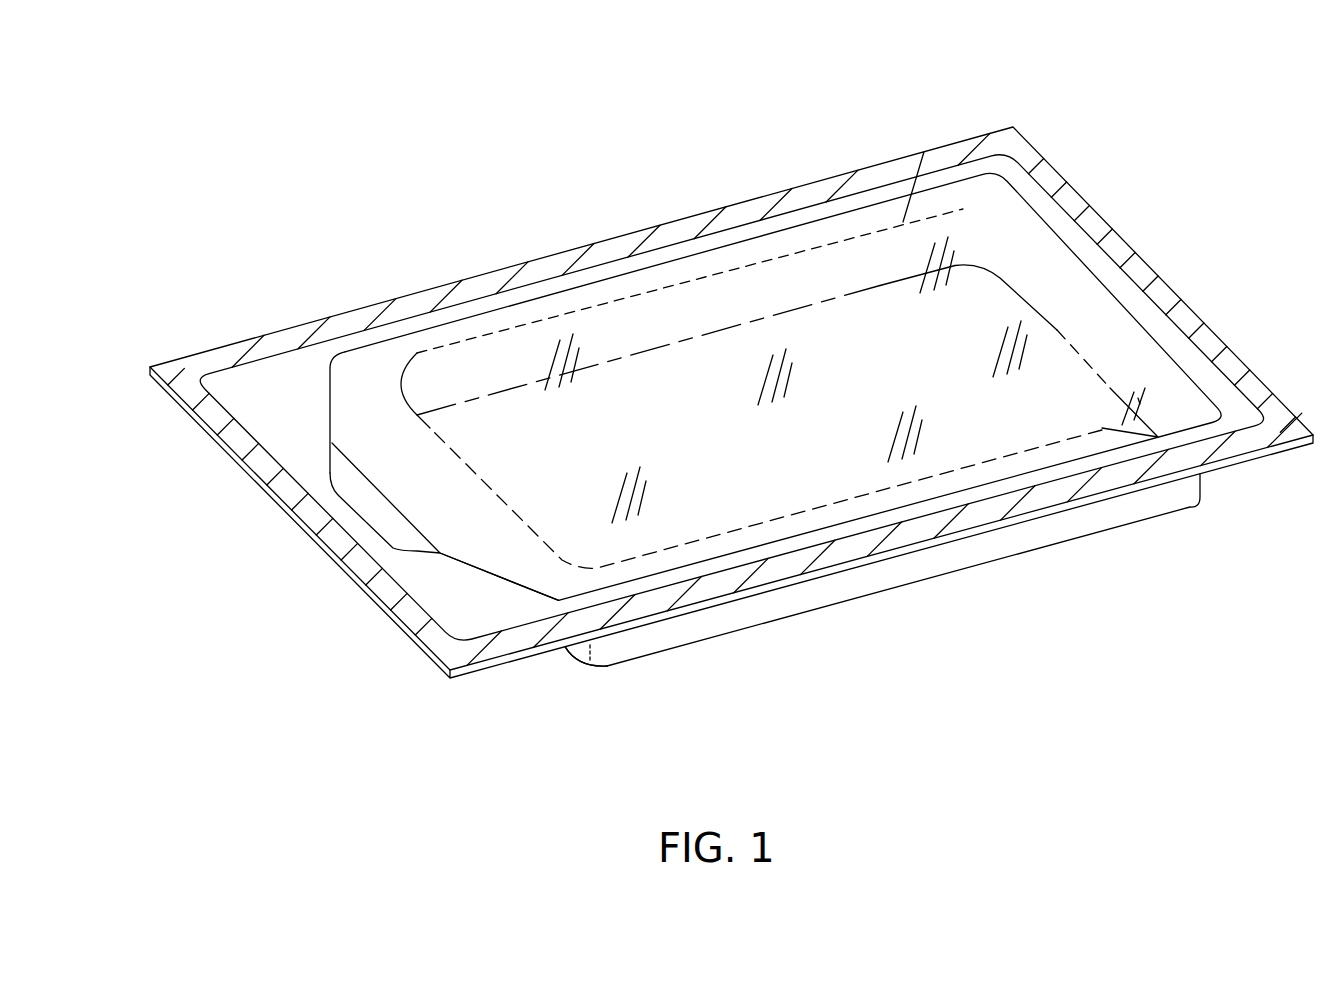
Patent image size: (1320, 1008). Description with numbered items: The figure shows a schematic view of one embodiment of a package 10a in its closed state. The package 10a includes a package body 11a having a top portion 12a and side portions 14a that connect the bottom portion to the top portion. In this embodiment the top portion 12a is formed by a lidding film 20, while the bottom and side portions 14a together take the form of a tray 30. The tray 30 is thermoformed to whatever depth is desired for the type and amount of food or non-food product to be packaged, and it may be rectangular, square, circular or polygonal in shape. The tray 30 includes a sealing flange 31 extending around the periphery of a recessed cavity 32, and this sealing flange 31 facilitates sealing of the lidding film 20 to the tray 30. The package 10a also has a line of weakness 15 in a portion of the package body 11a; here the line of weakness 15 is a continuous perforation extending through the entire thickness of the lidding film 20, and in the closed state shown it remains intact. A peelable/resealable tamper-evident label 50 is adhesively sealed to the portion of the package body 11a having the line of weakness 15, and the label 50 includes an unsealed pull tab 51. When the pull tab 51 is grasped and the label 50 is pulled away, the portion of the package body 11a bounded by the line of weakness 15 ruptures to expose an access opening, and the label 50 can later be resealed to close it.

The package 10a is at (588, 120).
The package body 11a is at (1005, 217).
The top portion 12a is at (1058, 290).
The side portions 14a is at (1178, 497).
The line of weakness 15 is at (745, 262).
The lidding film 20 is at (277, 373).
The peelable/resealable tamper-evident label 50 is at (358, 423).
The unsealed pull tab 51 is at (367, 503).
The sealing flange 31 is at (470, 597).
The recessed cavity 32 is at (733, 455).
The tray 30 is at (608, 652).